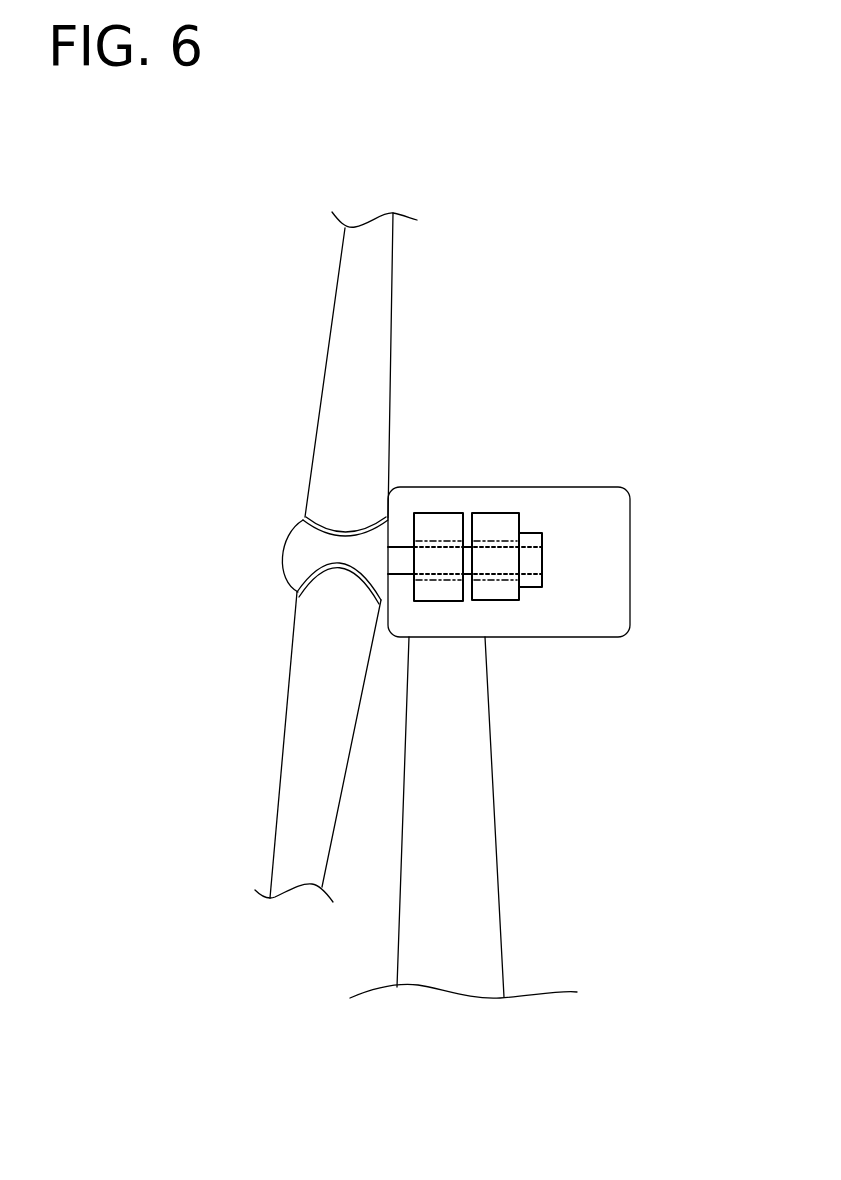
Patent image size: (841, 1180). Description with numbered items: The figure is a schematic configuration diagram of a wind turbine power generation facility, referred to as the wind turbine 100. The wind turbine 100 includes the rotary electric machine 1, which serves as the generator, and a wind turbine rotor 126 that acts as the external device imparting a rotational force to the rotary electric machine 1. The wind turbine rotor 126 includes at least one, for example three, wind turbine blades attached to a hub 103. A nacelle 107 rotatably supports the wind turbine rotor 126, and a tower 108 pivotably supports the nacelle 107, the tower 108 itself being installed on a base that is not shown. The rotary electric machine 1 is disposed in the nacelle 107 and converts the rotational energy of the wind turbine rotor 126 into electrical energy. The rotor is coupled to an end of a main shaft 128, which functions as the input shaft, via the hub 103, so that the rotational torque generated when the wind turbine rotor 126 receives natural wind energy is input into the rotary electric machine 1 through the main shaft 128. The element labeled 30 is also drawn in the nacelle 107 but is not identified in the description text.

The wind turbine 100 is at (523, 91).
The wind turbine rotor 126 is at (212, 522).
The hub 103 is at (298, 553).
The nacelle 107 is at (617, 541).
The main shaft 128 is at (399, 555).
The rotary electric machine 1 is at (492, 513).
The generator 30 is at (532, 533).
The tower 108 is at (490, 876).